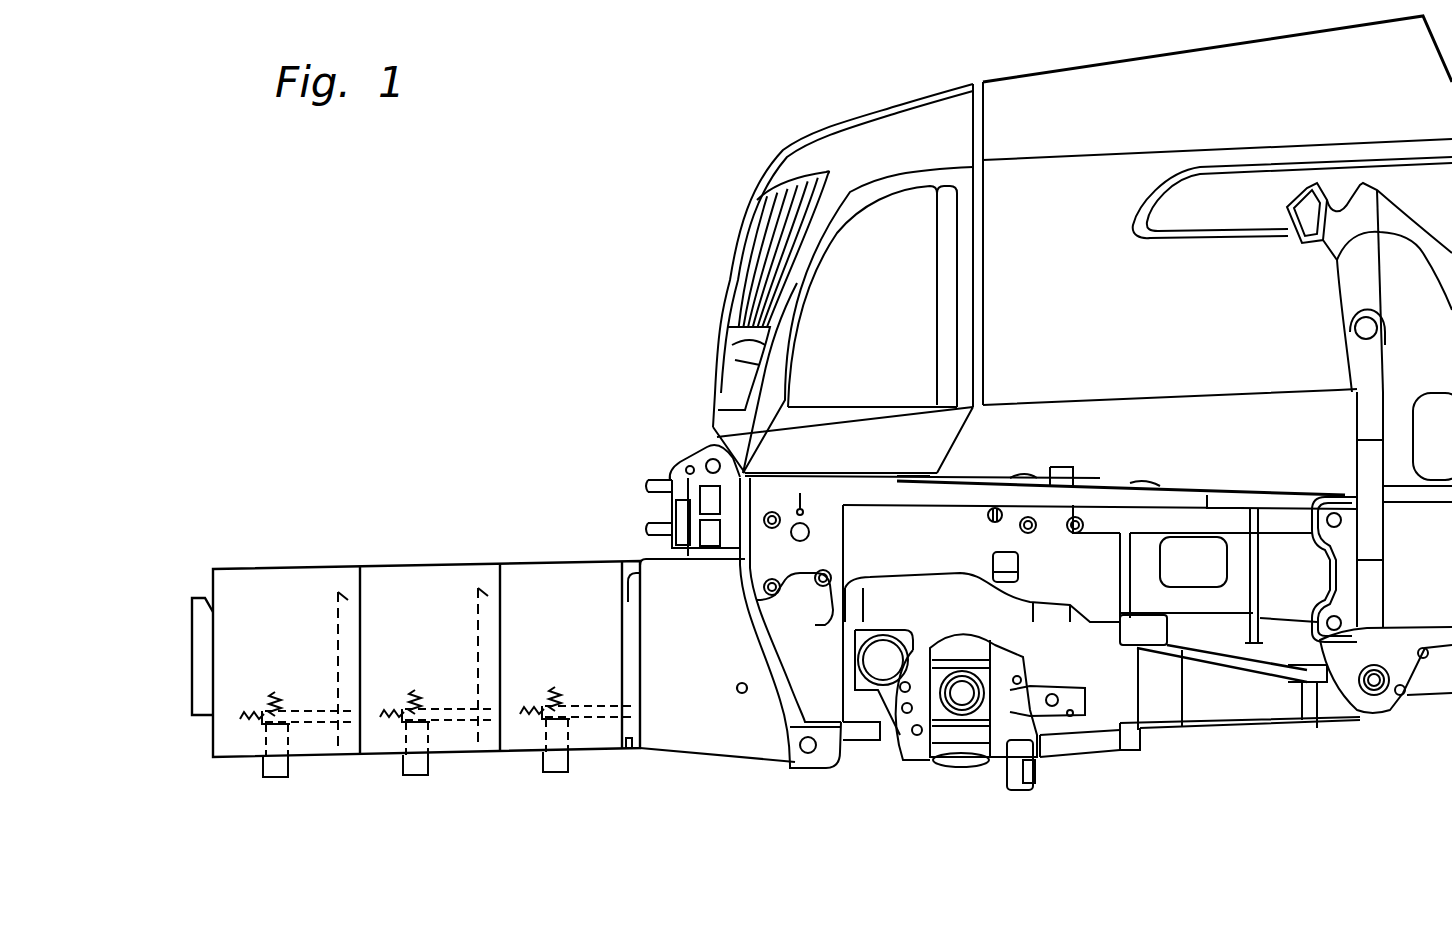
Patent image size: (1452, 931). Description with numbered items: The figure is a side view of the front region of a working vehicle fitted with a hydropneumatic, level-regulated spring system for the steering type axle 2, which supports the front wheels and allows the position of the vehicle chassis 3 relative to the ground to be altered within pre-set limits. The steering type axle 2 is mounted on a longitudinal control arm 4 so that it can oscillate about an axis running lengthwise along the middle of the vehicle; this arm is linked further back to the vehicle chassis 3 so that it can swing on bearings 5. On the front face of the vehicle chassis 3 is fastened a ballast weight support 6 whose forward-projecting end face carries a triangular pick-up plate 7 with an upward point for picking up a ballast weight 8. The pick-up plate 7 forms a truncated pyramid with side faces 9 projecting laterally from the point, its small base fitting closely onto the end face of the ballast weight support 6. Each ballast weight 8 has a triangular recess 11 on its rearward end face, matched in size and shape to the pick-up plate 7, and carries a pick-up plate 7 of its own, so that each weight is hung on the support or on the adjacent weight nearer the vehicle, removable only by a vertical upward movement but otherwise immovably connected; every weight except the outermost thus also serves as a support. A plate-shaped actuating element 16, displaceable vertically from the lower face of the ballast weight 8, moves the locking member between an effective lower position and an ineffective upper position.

The steering type axle 2 is at (915, 755).
The vehicle chassis 3 is at (1247, 502).
The longitudinal control arm 4 is at (1208, 706).
The bearings 5 is at (1376, 696).
The ballast weight support 6 is at (716, 737).
The pick-up plate 7 is at (201, 630).
The ballast weight 8 is at (247, 598).
The side faces 9 is at (632, 586).
The triangular recess 11 is at (631, 758).
The actuating element 16 is at (420, 770).